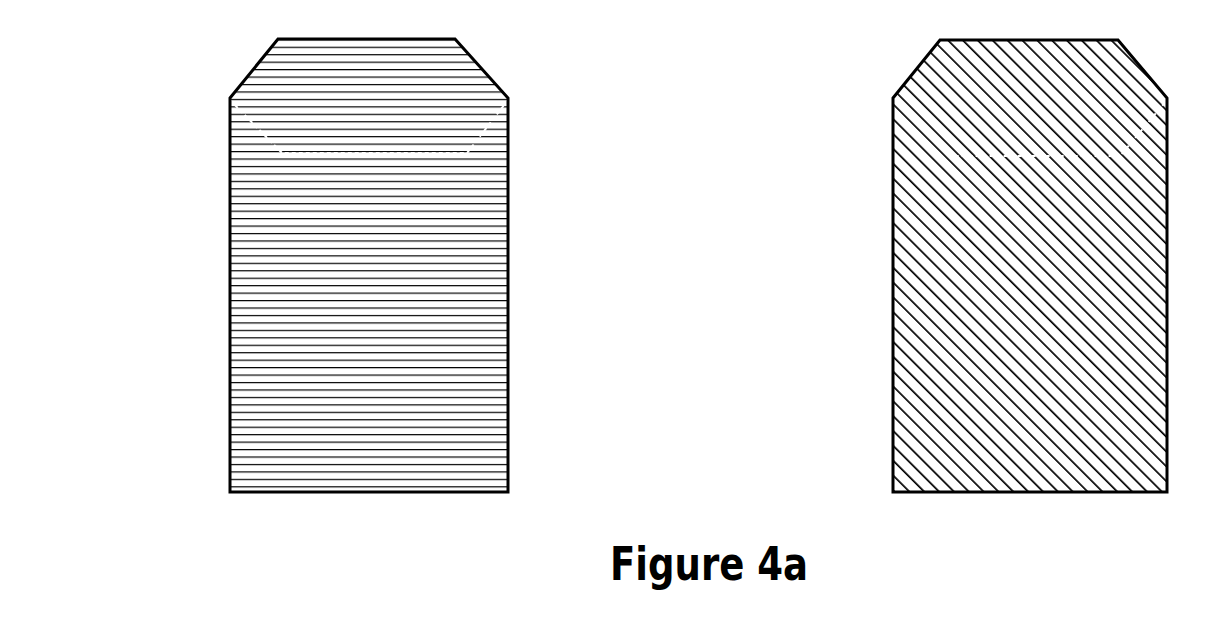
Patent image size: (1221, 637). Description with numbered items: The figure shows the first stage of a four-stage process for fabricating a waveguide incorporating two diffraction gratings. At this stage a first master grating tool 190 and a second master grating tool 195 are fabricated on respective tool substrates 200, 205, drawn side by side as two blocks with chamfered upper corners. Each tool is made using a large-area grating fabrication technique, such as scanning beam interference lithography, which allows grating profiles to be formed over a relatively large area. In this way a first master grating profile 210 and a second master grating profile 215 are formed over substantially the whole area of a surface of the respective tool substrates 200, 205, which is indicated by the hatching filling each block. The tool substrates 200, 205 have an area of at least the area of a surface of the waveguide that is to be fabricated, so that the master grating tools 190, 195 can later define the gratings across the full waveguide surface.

The first master grating tool 190 is at (296, 254).
The second master grating tool 195 is at (959, 253).
The tool substrate 200 is at (230, 175).
The tool substrate 205 is at (893, 174).
The first master grating profile 210 is at (285, 378).
The second master grating profile 215 is at (947, 368).